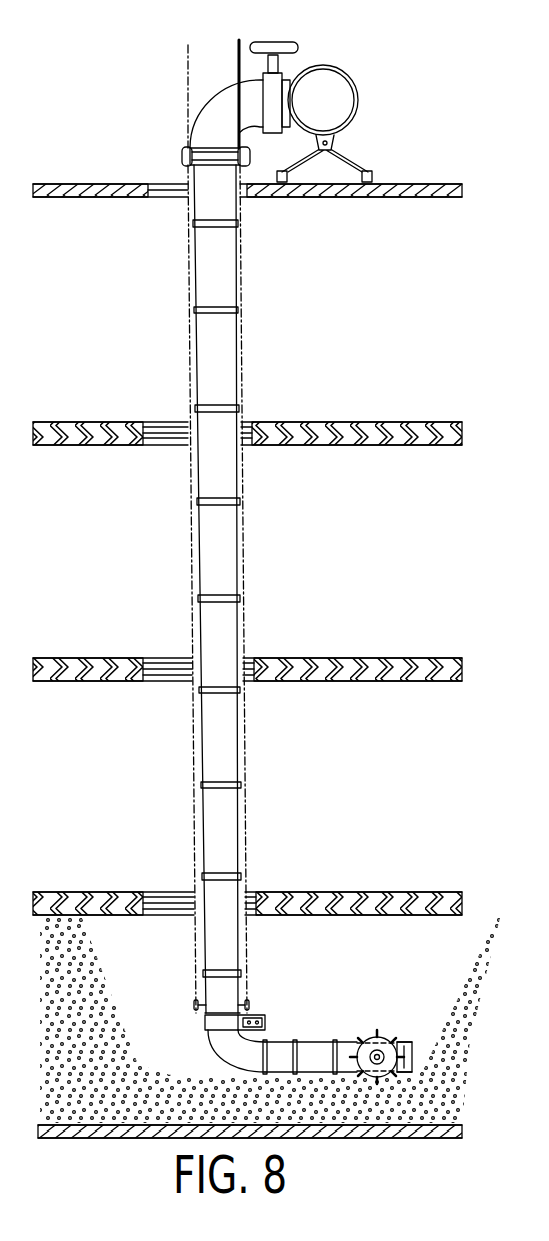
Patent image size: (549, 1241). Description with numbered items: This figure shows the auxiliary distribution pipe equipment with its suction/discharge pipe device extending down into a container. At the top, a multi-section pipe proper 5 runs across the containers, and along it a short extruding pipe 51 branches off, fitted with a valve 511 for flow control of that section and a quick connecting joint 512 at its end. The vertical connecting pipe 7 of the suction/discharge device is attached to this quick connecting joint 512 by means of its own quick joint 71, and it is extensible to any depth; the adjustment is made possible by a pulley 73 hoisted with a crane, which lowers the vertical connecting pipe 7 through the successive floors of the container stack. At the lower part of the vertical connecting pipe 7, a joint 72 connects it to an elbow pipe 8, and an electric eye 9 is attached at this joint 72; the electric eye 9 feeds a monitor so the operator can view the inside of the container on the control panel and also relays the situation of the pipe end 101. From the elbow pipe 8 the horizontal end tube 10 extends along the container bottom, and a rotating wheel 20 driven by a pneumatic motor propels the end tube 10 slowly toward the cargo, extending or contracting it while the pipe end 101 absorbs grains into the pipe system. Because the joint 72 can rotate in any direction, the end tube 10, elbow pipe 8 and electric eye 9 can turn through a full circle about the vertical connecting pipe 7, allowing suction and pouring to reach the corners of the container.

The pipe proper 5 is at (342, 85).
The extruding pipe 51 is at (220, 115).
The valve 511 is at (273, 43).
The quick connecting joint 512 is at (200, 153).
The vertical connecting pipe 7 is at (222, 355).
The quick joint 71 is at (212, 160).
The joint 72 is at (207, 1025).
The pulley 73 is at (250, 1005).
The elbow pipe 8 is at (221, 1047).
The electric eye 9 is at (265, 1015).
The horizontal end tube 10 is at (347, 1050).
The pipe end 101 is at (400, 1043).
The rotating wheel 20 is at (375, 1040).